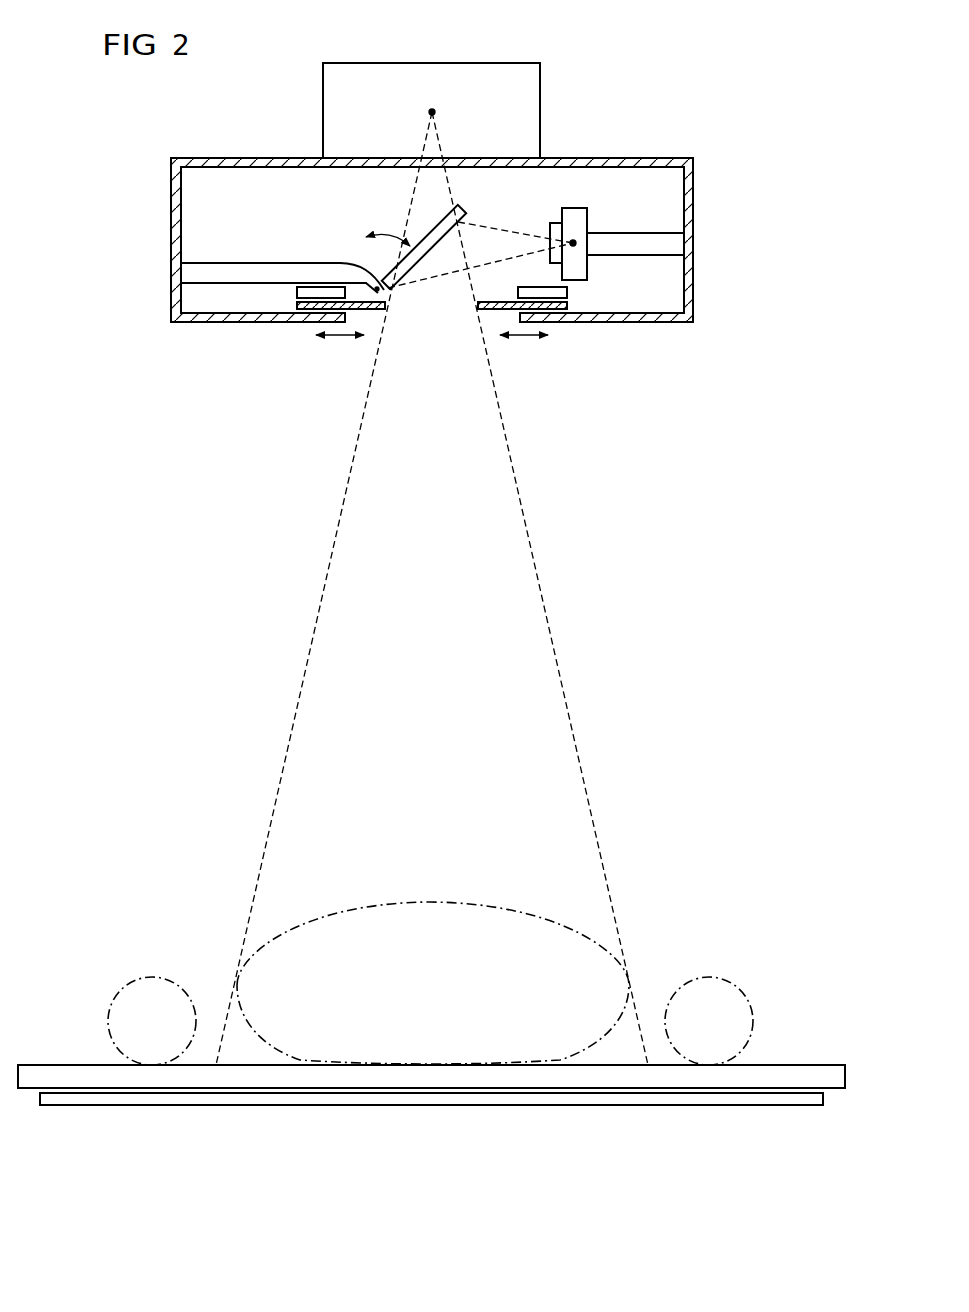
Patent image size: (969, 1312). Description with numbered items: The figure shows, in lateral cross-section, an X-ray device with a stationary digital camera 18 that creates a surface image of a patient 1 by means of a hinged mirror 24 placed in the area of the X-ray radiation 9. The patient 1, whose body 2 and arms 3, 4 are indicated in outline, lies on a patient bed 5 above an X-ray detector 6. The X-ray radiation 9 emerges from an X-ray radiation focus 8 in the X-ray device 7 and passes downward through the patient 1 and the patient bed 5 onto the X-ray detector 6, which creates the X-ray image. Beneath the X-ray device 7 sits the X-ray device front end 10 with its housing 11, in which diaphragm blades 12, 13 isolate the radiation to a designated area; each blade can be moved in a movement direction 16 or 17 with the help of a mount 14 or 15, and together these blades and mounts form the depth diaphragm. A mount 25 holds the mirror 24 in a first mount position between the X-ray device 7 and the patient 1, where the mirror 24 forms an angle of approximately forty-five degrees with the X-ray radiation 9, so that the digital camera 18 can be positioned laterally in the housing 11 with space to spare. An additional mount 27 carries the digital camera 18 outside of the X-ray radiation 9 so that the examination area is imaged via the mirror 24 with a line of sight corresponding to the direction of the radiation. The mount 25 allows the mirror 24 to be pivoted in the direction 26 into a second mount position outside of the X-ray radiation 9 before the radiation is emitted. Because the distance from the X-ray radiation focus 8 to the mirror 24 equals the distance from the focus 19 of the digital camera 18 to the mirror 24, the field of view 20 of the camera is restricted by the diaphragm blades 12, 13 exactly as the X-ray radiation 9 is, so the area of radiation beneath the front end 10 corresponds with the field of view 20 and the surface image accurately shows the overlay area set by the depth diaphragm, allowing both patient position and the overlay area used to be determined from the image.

The patient 1 is at (433, 937).
The patient body 2 is at (365, 916).
The patient arm 3 is at (150, 987).
The patient arm 4 is at (710, 987).
The patient bed 5 is at (825, 1072).
The X-ray detector 6 is at (690, 1098).
The X-ray device 7 is at (556, 107).
The X-ray radiation focus 8 is at (429, 111).
The X-ray radiation 9 is at (427, 143).
The X-ray device front end 10 is at (716, 209).
The housing 11 is at (690, 298).
The diaphragm blade 12 is at (371, 300).
The diaphragm blade 13 is at (490, 302).
The mount 14 is at (300, 292).
The mount 15 is at (566, 294).
The movement direction 16 is at (340, 338).
The movement direction 17 is at (524, 338).
The digital camera 18 is at (579, 196).
The focus of the digital camera 19 is at (576, 243).
The field of view 20 is at (524, 241).
The mirror 24 is at (431, 242).
The mount for the mirror 25 is at (211, 270).
The pivot direction 26 is at (406, 243).
The mount for the digital camera 27 is at (648, 245).